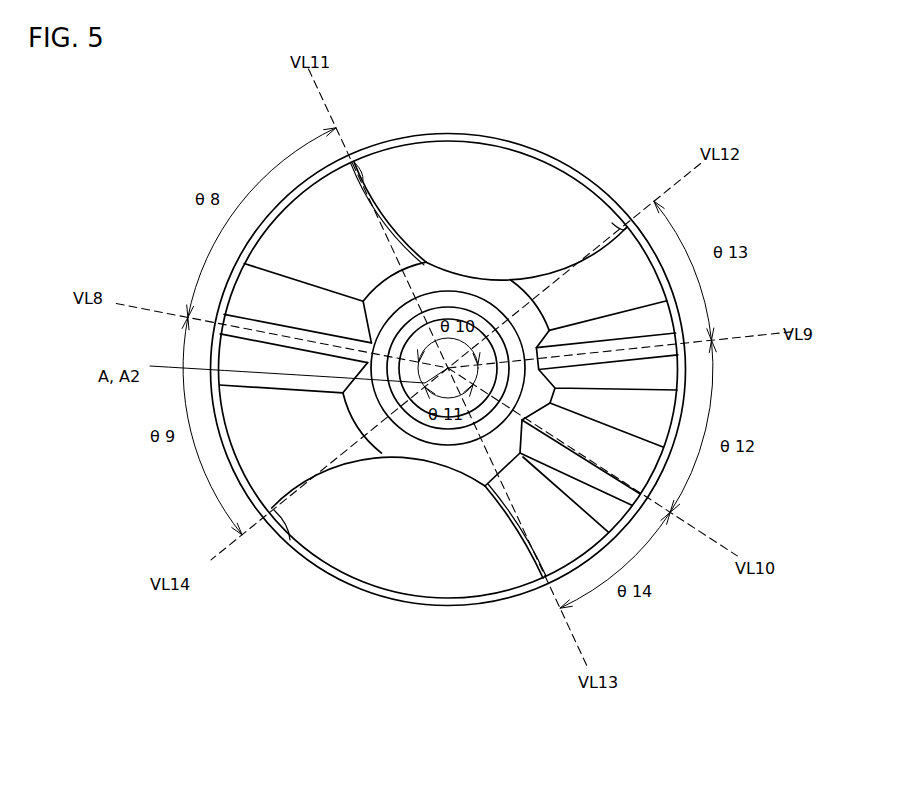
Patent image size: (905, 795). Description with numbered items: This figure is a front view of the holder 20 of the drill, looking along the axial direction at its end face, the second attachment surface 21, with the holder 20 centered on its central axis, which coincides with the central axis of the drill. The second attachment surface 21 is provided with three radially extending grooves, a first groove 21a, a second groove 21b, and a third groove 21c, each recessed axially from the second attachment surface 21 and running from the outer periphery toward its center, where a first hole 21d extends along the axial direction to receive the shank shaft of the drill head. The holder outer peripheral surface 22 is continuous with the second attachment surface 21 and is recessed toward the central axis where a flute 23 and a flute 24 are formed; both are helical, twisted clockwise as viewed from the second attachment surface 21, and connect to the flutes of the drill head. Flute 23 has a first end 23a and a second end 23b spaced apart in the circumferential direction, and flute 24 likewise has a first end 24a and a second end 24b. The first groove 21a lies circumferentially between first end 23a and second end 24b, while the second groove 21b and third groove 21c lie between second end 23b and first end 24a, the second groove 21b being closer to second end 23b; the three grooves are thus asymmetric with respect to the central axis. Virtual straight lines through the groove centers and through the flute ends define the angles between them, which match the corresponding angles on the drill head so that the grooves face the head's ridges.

The holder 20 is at (191, 114).
The second attachment surface 21 is at (535, 508).
The first groove 21a is at (246, 298).
The second groove 21b is at (663, 318).
The third groove 21c is at (634, 464).
The first hole 21d is at (507, 308).
The holder outer peripheral surface 22 is at (240, 498).
The flute 23 is at (436, 260).
The first end 23a is at (354, 163).
The second end 23b is at (613, 228).
The flute 24 is at (353, 462).
The first end 24a is at (541, 579).
The second end 24b is at (292, 548).